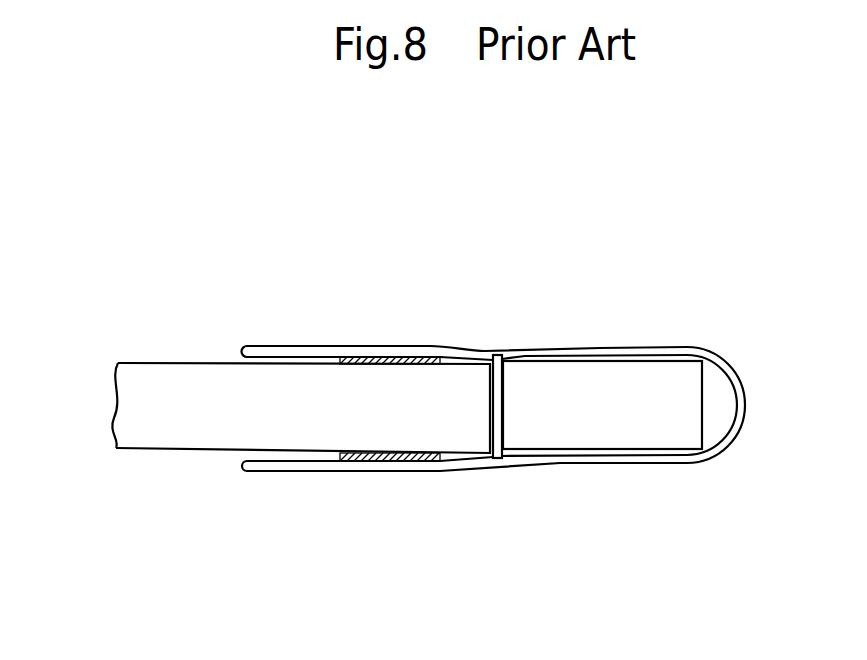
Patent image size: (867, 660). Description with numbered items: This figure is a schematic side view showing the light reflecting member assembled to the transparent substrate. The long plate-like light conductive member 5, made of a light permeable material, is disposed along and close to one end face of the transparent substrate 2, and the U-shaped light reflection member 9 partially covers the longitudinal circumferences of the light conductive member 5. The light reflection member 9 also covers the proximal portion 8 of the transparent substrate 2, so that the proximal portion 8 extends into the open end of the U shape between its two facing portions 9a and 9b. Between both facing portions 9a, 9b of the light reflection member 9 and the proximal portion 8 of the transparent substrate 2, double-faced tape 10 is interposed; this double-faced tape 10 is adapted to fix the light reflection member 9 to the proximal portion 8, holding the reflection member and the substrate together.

The transparent substrate 2 is at (301, 490).
The proximal portion 8 is at (197, 427).
The light reflection member 9 is at (494, 385).
The facing portion 9a is at (480, 352).
The facing portion 9b is at (470, 471).
The double-faced tape 10 is at (363, 357).
The light conductive member 5 is at (596, 430).